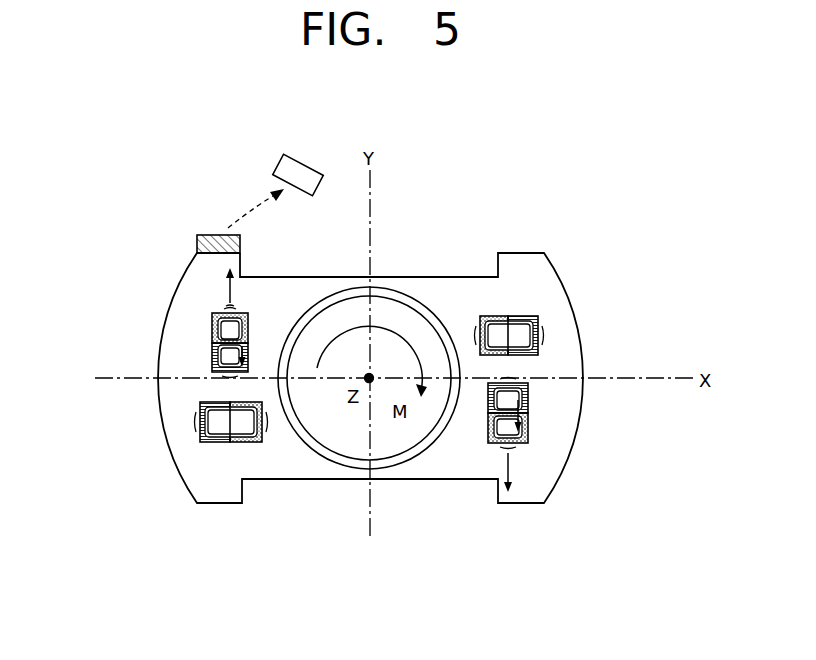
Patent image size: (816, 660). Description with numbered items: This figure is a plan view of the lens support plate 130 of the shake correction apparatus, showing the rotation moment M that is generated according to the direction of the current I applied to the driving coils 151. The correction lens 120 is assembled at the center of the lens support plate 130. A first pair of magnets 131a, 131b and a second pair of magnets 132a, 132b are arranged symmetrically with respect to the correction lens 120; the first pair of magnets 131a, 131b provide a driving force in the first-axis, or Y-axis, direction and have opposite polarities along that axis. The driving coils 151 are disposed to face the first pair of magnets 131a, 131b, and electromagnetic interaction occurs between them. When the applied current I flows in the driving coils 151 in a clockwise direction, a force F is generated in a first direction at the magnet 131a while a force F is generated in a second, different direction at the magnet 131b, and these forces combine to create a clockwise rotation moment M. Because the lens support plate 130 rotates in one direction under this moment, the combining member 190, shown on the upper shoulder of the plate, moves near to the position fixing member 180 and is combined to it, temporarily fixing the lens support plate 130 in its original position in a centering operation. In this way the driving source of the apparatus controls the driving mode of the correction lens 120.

The correction lens 120 is at (332, 433).
The lens support plate 130 is at (540, 277).
The magnet 131a is at (169, 323).
The magnet 131b is at (530, 421).
The magnet 132a is at (530, 317).
The magnet 132b is at (217, 443).
The driving coils 151 is at (212, 352).
The position fixing member 180 is at (282, 165).
The combining member 190 is at (197, 242).